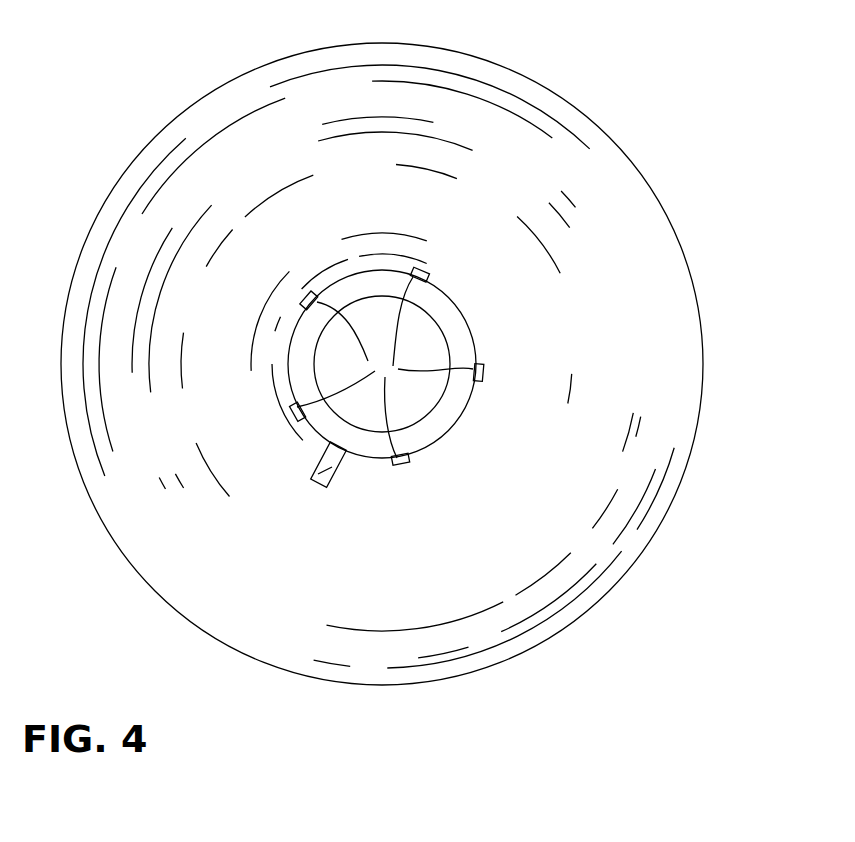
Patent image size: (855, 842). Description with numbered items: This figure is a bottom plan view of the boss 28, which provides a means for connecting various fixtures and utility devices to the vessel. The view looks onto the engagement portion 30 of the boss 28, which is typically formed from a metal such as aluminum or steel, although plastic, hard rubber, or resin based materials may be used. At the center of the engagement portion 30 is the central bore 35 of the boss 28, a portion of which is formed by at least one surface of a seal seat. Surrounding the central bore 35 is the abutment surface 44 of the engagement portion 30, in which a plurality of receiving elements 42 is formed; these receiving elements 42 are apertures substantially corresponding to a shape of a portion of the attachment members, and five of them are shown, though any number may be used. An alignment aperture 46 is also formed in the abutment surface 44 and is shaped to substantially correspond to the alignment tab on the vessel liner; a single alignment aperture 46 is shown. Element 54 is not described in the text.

The boss 28 is at (86, 151).
The engagement portion 30 is at (670, 325).
The central bore 35 is at (412, 398).
The receiving elements 42 is at (382, 364).
The abutment surface 44 is at (543, 442).
The alignment aperture 46 is at (333, 468).
The hub ring 54 is at (452, 326).